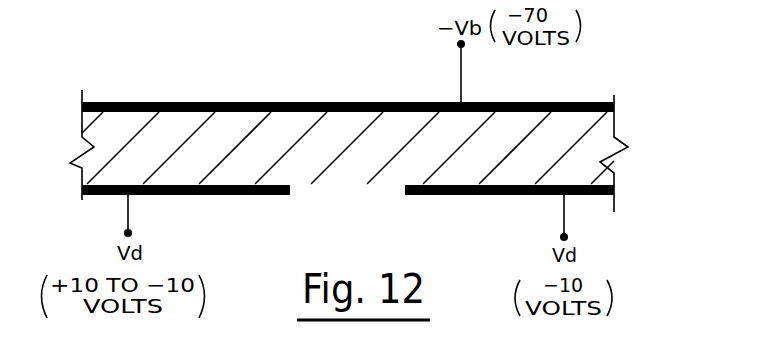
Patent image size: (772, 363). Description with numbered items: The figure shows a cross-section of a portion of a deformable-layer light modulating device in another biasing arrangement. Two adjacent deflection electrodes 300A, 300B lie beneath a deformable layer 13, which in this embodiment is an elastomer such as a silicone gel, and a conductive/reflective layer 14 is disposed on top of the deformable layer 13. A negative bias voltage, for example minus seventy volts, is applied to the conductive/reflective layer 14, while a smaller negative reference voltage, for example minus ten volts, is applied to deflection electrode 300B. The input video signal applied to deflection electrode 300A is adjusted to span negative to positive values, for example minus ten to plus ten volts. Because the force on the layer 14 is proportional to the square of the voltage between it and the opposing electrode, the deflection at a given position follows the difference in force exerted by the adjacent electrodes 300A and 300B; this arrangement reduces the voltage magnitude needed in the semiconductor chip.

The deformable layer 13 is at (233, 122).
The conductive/reflective layer 14 is at (157, 102).
The deflection electrode 300A is at (230, 195).
The deflection electrode 300B is at (467, 195).